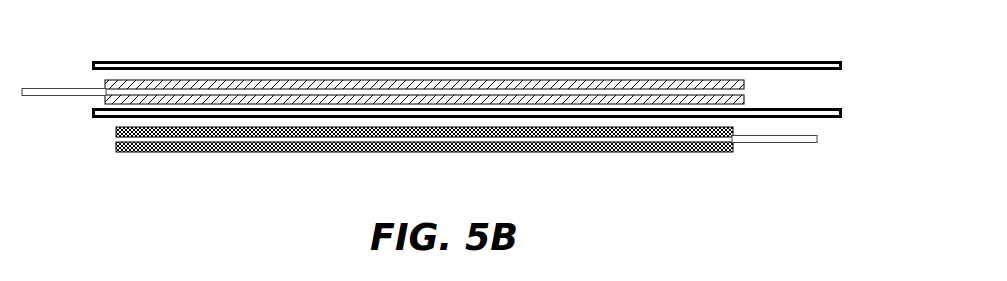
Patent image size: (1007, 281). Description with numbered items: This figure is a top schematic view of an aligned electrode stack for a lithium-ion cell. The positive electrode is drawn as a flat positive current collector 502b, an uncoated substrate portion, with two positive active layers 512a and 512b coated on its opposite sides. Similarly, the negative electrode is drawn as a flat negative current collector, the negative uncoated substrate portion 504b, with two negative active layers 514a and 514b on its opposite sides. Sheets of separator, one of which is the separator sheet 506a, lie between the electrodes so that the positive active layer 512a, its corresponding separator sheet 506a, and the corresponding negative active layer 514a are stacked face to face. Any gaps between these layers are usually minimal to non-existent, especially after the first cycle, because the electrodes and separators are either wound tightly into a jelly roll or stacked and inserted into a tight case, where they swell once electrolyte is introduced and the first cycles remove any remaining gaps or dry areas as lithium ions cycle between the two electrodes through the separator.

The flat positive current collector 502b is at (777, 142).
The negative uncoated substrate portion 504b is at (55, 88).
The separator sheet 506a is at (747, 67).
The positive active layer 512a is at (680, 132).
The positive active layer 512b is at (587, 152).
The negative active layer 514a is at (158, 95).
The negative active layer 514b is at (257, 80).